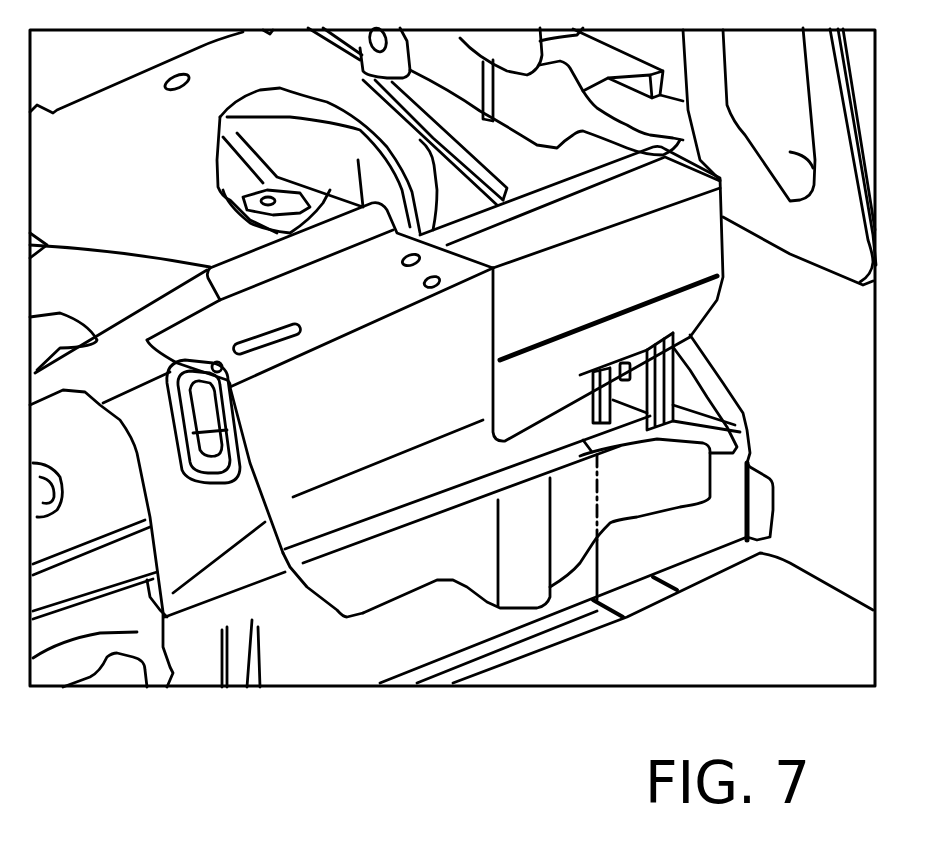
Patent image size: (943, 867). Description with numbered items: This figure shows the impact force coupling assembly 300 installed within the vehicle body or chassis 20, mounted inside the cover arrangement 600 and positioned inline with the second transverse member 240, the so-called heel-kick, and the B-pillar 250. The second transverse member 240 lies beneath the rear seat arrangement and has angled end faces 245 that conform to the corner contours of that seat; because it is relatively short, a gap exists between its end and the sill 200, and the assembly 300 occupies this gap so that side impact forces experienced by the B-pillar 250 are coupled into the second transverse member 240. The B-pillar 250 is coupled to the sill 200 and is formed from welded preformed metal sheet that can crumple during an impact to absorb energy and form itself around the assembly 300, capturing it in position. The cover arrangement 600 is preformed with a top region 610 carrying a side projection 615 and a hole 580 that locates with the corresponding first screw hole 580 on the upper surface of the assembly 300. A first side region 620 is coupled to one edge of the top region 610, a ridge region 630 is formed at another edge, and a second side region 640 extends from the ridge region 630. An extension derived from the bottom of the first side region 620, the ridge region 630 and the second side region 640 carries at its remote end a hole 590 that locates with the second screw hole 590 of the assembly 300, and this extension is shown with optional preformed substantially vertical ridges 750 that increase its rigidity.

The body or chassis 20 is at (142, 184).
The sill 200 is at (848, 518).
The second transverse member 240 is at (117, 367).
The angled end face 245 is at (227, 531).
The B-pillar 250 is at (787, 101).
The impact force coupling assembly 300 is at (650, 274).
The first screw hole 580 is at (428, 284).
The second screw hole 590 is at (580, 377).
The cover arrangement 600 is at (391, 408).
The top region 610 is at (330, 314).
The side projection 615 is at (255, 267).
The first side region 620 is at (470, 354).
The ridge region 630 is at (337, 537).
The second side region 640 is at (470, 560).
The vertical ridges 750 is at (625, 413).